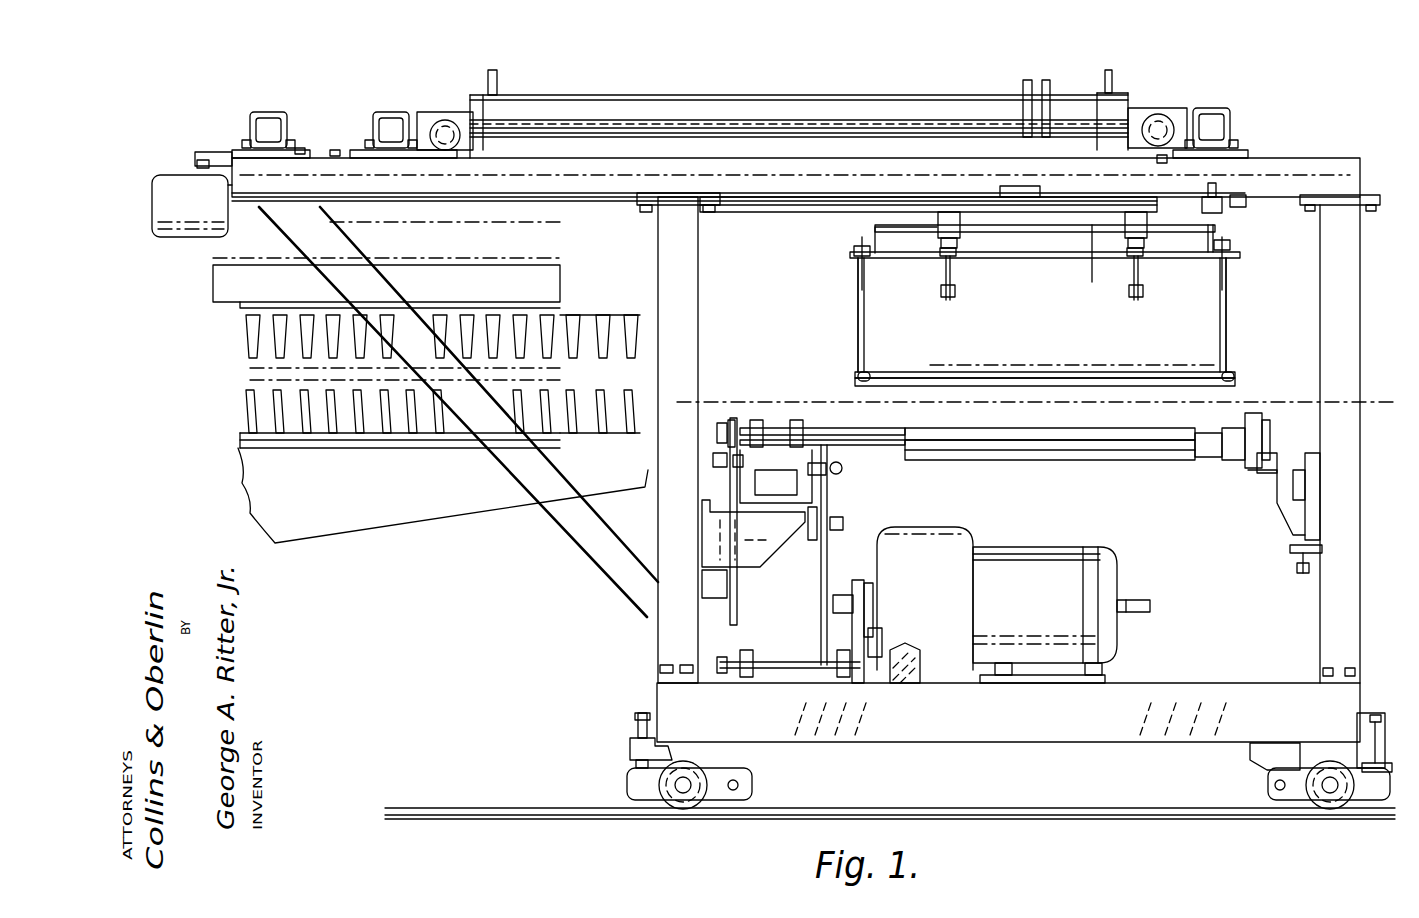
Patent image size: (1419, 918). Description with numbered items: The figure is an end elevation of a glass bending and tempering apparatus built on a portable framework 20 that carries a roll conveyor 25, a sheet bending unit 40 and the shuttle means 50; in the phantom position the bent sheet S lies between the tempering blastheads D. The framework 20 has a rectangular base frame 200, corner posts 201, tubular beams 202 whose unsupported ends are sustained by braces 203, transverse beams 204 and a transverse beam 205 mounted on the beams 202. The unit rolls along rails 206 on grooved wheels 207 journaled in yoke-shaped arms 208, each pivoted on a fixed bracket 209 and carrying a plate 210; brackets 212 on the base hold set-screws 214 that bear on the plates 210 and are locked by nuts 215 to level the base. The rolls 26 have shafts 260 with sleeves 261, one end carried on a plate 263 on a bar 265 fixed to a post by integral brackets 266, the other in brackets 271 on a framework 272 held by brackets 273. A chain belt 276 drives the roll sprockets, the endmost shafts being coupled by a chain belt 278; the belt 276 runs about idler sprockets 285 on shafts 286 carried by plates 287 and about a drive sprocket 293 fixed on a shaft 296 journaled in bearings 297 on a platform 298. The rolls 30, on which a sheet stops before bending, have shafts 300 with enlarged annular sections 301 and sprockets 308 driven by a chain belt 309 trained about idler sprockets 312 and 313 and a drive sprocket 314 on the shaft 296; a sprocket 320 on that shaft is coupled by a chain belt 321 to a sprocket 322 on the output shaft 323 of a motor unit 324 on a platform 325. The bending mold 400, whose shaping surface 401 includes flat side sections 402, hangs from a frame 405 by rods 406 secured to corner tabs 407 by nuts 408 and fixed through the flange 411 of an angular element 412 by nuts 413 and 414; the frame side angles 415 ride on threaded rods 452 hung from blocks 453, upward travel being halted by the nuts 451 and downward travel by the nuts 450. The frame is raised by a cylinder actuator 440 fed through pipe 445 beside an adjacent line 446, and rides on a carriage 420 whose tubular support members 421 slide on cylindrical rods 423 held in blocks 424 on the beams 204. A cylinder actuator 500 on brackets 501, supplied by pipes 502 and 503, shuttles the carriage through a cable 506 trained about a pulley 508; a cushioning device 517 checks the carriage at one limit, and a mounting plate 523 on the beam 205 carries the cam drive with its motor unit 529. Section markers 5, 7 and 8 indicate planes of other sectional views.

The framework 20 is at (655, 671).
The roll conveyor 25 is at (1122, 470).
The rolls 26 is at (872, 432).
The rolls 30 is at (1046, 462).
The sheet bending unit 40 is at (857, 283).
The means for moving the bending unit 50 is at (588, 90).
The base frame 200 is at (1238, 683).
The posts 201 is at (690, 340).
The beams 202 is at (1333, 165).
The braces 203 is at (563, 525).
The beams 204 is at (395, 112).
The beam 205 is at (272, 112).
The rails 206 is at (475, 812).
The grooved wheels 207 is at (1328, 810).
The yoke-shaped arms 208 is at (1270, 791).
The fixed bracket 209 is at (1260, 759).
The plate 210 is at (628, 766).
The brackets 212 is at (647, 730).
The set-screws 214 is at (638, 717).
The nuts 215 is at (628, 738).
The shaft 260 is at (1240, 432).
The sleeve 261 is at (1220, 435).
The plate 263 is at (1258, 430).
The bar 265 is at (1270, 453).
The brackets 266 is at (1272, 480).
The brackets 271 is at (763, 420).
The framework 272 is at (795, 537).
The bracket 273 is at (748, 550).
The chain belt 276 is at (730, 477).
The chain belt 278 is at (720, 422).
The idler sprockets 285 is at (730, 462).
The shafts 286 is at (713, 460).
The plates 287 is at (776, 478).
The drive sprocket 293 is at (720, 654).
The shaft 296 is at (780, 690).
The bearings 297 is at (747, 652).
The platform 298 is at (755, 684).
The shafts 300 is at (1208, 447).
The annular sections 301 is at (937, 450).
The sprocket 308 is at (843, 462).
The chain belt 309 is at (836, 537).
The idler sprocket 312 is at (832, 477).
The idler sprocket 313 is at (848, 523).
The drive sprocket 314 is at (818, 661).
The sprocket 320 is at (882, 647).
The chain belt 321 is at (862, 636).
The sprocket 322 is at (853, 583).
The output shaft 323 is at (836, 607).
The motor unit 324 is at (955, 535).
The platform 325 is at (993, 685).
The bending mold 400 is at (253, 382).
The shaping surface 401 is at (1100, 363).
The side sections 402 is at (1003, 380).
The frame 405 is at (626, 232).
The rods 406 is at (858, 320).
The corner tabs 407 is at (857, 370).
The nuts 408 is at (856, 374).
The flange 411 is at (850, 255).
The angular element 412 is at (873, 228).
The nuts 413 is at (1232, 247).
The nuts 414 is at (1230, 254).
The frame side angles 415 is at (1058, 236).
The carriage 420 is at (412, 218).
The tubular support members 421 is at (968, 197).
The cylindrical rods 423 is at (333, 170).
The blocks 424 is at (297, 143).
The cylinder actuator 440 is at (991, 165).
The pipe 445 is at (1025, 85).
The post 446 is at (1042, 78).
The nuts 450 is at (940, 292).
The nuts 451 is at (945, 240).
The threaded rods 452 is at (945, 270).
The block 453 is at (958, 234).
The cylinder actuator 500 is at (648, 107).
The brackets 501 is at (452, 112).
The pipe 502 is at (490, 83).
The pipe 503 is at (1104, 80).
The cable 506 is at (808, 162).
The pulley 508 is at (478, 160).
The cushioning device 517 is at (1246, 205).
The mounting plate 523 is at (248, 140).
The motor unit 529 is at (180, 187).
The section line 5 is at (677, 440).
The section arrow 7 is at (1097, 183).
The section arrow 8 is at (1188, 222).
The sheet S is at (945, 362).
The tempering blastheads D is at (400, 528).